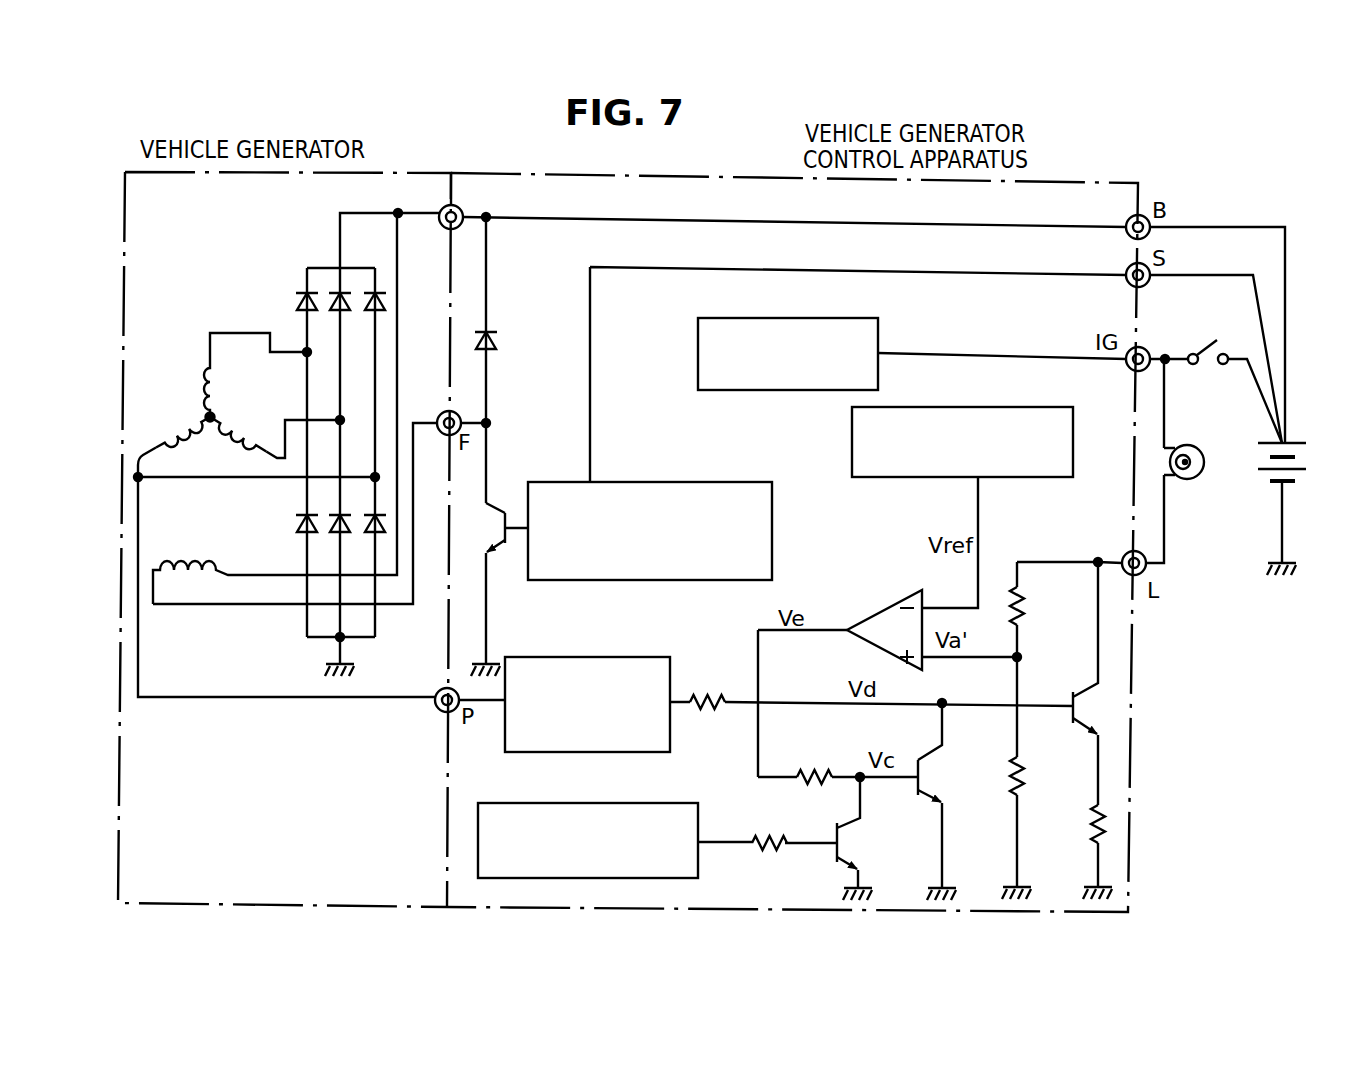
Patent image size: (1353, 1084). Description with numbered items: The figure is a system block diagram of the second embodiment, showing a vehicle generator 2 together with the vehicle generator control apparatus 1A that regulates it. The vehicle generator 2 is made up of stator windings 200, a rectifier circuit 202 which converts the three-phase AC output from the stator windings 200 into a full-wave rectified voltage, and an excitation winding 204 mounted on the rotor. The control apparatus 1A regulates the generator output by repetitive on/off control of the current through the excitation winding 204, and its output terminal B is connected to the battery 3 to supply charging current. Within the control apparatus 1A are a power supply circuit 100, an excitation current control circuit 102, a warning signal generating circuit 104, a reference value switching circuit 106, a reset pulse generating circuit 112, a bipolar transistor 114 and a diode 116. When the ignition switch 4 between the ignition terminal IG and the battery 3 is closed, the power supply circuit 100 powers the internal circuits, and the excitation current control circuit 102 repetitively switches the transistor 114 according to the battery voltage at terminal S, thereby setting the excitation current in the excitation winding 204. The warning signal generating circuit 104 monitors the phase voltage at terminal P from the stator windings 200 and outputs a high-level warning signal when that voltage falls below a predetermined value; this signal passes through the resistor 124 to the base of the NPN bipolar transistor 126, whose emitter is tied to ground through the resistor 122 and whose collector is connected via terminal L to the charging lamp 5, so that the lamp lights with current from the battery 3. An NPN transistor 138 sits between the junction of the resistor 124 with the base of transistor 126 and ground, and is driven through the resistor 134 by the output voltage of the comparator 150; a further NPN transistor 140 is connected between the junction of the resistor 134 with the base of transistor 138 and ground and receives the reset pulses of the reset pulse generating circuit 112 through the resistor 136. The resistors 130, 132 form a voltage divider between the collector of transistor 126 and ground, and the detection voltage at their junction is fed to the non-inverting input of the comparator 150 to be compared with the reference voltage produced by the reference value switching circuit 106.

The vehicle generator control apparatus 1A is at (1104, 183).
The vehicle generator 2 is at (412, 172).
The battery 3 is at (1297, 441).
The ignition switch 4 is at (1212, 346).
The charging lamp 5 is at (1188, 446).
The power supply circuit 100 is at (870, 302).
The excitation current control circuit 102 is at (658, 466).
The warning signal generating circuit 104 is at (608, 657).
The reference value switching circuit 106 is at (1060, 389).
The reset pulse generating circuit 112 is at (690, 792).
The bipolar transistor 114 is at (496, 500).
The diode 116 is at (495, 330).
The resistor 122 is at (1095, 825).
The resistor 124 is at (709, 695).
The NPN bipolar transistor 126 is at (1073, 696).
The resistor 130 is at (1045, 608).
The resistor 132 is at (1045, 764).
The resistor 134 is at (815, 770).
The resistor 136 is at (764, 851).
The NPN transistor 138 is at (924, 790).
The NPN transistor 140 is at (846, 857).
The comparator 150 is at (876, 614).
The stator windings 200 is at (205, 410).
The rectifier circuit 202 is at (307, 268).
The excitation winding 204 is at (200, 568).